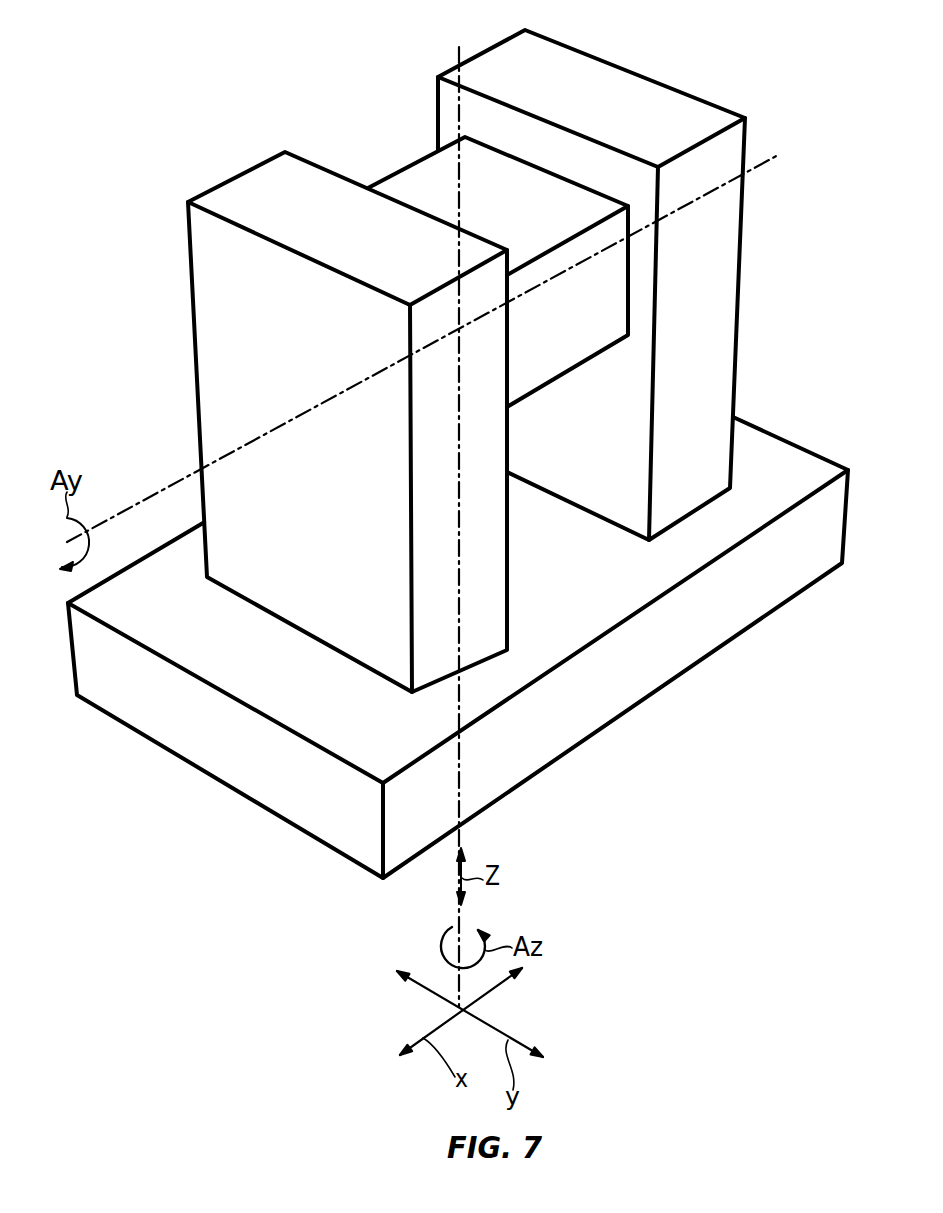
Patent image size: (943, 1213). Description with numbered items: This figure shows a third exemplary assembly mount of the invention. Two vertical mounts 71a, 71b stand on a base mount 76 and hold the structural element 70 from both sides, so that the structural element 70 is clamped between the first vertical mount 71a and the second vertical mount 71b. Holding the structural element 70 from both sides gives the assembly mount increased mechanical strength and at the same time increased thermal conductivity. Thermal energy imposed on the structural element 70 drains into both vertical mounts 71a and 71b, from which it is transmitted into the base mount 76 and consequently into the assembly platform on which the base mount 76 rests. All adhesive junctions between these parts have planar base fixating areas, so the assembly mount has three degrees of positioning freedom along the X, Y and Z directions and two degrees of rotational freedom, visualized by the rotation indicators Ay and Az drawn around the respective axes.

The structural element 70 is at (398, 172).
The vertical mount 71a is at (508, 57).
The vertical mount 71b is at (250, 183).
The base mount 76 is at (607, 697).